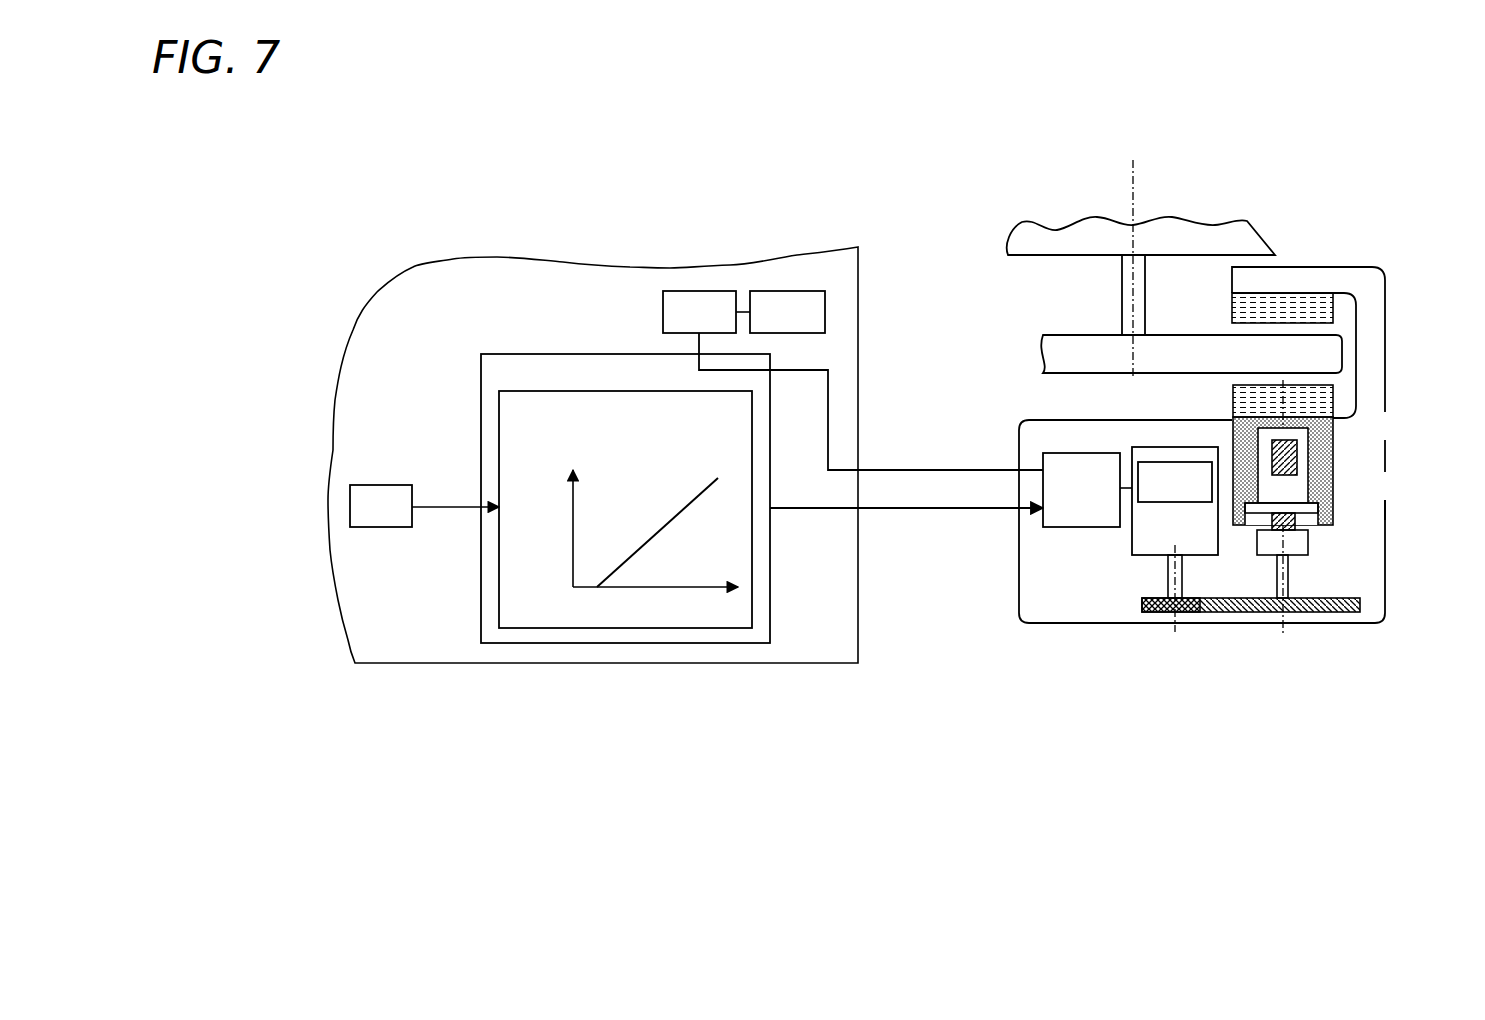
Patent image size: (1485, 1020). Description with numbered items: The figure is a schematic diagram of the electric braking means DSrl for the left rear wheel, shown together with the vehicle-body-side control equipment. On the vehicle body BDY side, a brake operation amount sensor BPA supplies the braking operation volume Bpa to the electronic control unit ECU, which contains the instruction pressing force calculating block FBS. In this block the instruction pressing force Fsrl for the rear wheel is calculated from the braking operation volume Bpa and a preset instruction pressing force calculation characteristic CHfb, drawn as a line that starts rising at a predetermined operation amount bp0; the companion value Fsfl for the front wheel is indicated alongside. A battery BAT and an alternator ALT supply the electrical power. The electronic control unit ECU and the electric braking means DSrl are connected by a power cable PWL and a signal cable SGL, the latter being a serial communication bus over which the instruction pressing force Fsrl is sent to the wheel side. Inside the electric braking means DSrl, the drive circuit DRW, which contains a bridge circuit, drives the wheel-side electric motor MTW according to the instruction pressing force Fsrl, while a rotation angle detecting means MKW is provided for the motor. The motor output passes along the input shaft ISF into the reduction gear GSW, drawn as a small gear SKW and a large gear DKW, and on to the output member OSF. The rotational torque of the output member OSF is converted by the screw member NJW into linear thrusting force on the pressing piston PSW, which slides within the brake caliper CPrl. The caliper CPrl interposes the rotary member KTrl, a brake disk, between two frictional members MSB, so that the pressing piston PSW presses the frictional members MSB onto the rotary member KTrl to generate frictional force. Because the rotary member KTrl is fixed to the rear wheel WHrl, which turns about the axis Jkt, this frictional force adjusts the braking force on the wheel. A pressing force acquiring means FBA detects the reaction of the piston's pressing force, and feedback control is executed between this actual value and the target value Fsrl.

The vehicle body BDY is at (858, 322).
The braking operation amount sensor BPA is at (381, 506).
The braking operation volume Bpa is at (455, 489).
The electronic control unit ECU is at (531, 353).
The instruction pressing force calculating block FBS is at (625, 509).
The instruction pressing force calculation characteristic CHfb is at (680, 512).
The instruction pressing force (front left) Fsfl is at (533, 521).
The predetermined operation amount bp0 is at (630, 597).
The battery BAT is at (699, 312).
The alternator ALT is at (787, 312).
The power cable (power line) PWL is at (871, 401).
The signal cable (signal line) SGL is at (906, 526).
The instruction pressing force Fsrl is at (813, 509).
The electric braking means DSrl is at (1100, 555).
The drive circuit DRW is at (1081, 490).
The wheel-side electric motor MTW is at (1175, 501).
The rotation angle detecting means MKW is at (1175, 482).
The input shaft ISF is at (1182, 578).
The output member OSF is at (1288, 578).
The reduction gear GSW is at (1293, 663).
The small gear SKW is at (1183, 612).
The large gear DKW is at (1242, 612).
The pressing force acquiring means FBA is at (1308, 545).
The pressing piston PSW is at (1333, 484).
The screw member NJW is at (1302, 468).
The frictional member (brake pad) MSB is at (1232, 310).
The brake caliper CPrl is at (1323, 267).
The rotary member (brake disk) KTrl is at (1085, 335).
The rear wheel WHrl is at (1010, 257).
The rotation axis Jkt is at (1135, 195).